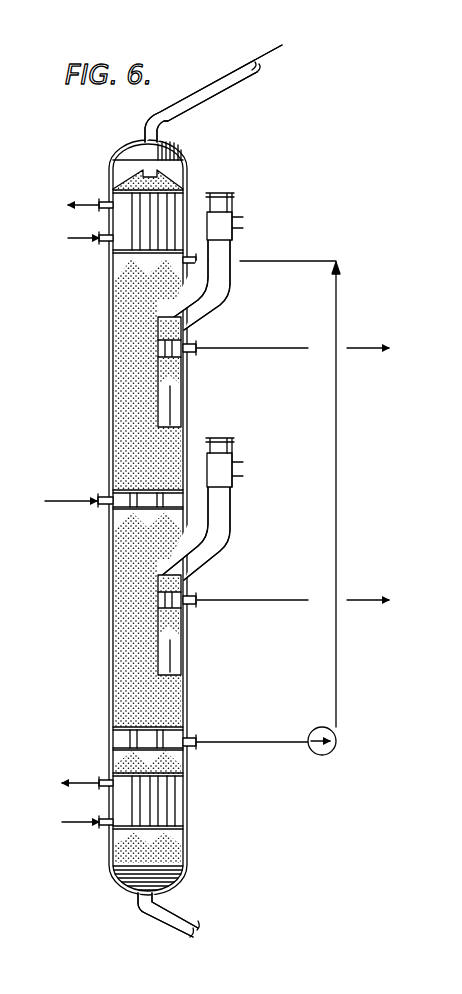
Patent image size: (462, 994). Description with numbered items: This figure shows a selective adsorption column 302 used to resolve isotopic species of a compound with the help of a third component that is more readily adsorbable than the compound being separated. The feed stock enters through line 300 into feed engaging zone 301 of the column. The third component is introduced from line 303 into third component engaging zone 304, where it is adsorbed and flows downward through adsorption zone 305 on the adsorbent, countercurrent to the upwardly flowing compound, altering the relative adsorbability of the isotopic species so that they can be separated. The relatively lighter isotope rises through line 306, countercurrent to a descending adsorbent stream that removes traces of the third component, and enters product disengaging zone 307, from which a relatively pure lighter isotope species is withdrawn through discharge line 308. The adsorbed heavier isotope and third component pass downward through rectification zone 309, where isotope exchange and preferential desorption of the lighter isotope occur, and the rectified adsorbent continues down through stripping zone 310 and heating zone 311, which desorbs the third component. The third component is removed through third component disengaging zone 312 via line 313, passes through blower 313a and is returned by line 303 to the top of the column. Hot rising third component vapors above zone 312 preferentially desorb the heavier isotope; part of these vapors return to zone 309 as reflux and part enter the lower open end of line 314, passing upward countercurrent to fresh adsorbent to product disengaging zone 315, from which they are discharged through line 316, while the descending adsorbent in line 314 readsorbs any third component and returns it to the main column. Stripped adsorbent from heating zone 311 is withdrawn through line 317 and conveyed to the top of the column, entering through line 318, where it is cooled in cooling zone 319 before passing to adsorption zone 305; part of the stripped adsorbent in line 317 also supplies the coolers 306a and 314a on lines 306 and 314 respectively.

The feed line 300 is at (66, 477).
The feed engaging zone 301 is at (120, 504).
The selective adsorption column 302 is at (132, 153).
The third component line 303 is at (304, 243).
The third component engaging zone 304 is at (118, 261).
The adsorption zone 305 is at (143, 450).
The lighter isotope line 306 is at (163, 412).
The cooler 306a is at (240, 208).
The product disengaging zone 307 is at (181, 340).
The discharge line 308 is at (253, 348).
The rectification zone 309 is at (130, 613).
The stripping zone 310 is at (120, 758).
The heating zone 311 is at (120, 797).
The third component disengaging zone 312 is at (177, 737).
The third component removal line 313 is at (227, 743).
The blower 313a is at (313, 757).
The heavier isotope line 314 is at (163, 662).
The cooler 314a is at (232, 453).
The product disengaging zone 315 is at (183, 588).
The discharge line 316 is at (240, 602).
The stripped adsorbent withdrawal line 317 is at (140, 917).
The adsorbent return line 318 is at (170, 118).
The cooling zone 319 is at (122, 217).